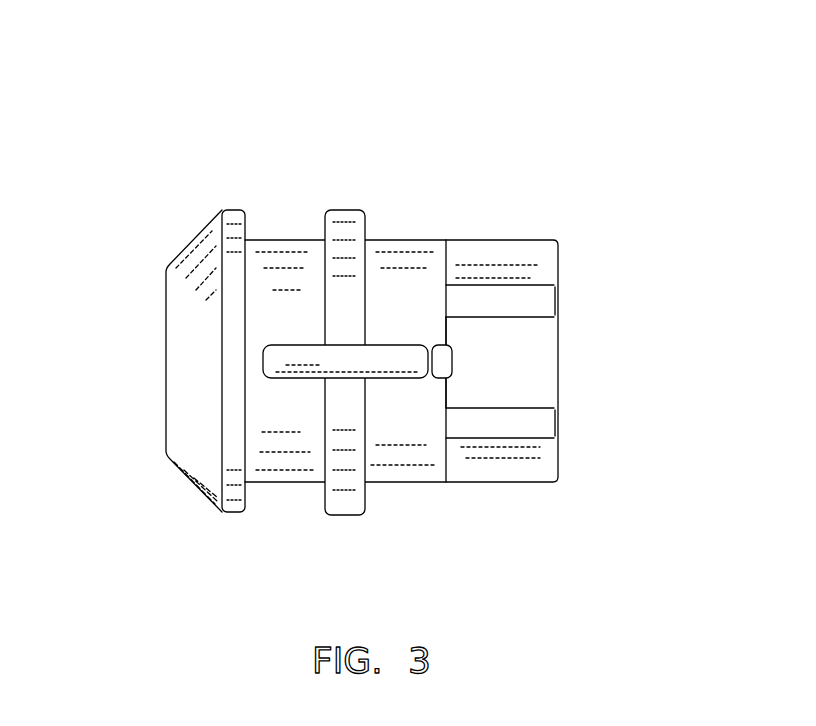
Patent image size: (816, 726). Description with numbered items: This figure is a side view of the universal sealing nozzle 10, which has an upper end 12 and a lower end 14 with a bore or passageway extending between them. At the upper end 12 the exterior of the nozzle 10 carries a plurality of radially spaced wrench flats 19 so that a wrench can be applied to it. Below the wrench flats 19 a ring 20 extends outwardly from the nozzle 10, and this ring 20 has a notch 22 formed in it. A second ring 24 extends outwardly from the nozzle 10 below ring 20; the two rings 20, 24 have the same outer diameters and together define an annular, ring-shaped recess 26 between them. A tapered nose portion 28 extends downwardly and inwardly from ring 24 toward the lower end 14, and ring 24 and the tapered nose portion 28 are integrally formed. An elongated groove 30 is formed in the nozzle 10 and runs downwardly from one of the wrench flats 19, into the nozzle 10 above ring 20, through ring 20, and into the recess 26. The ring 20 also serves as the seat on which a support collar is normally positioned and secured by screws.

The nozzle 10 is at (492, 146).
The upper end 12 is at (610, 325).
The lower end 14 is at (105, 310).
The wrench flats 19 is at (519, 373).
The ring 20 is at (507, 250).
The notch 22 is at (350, 345).
The ring 24 is at (233, 214).
The annular recess 26 is at (286, 240).
The tapered nose portion 28 is at (173, 342).
The elongated groove 30 is at (400, 365).